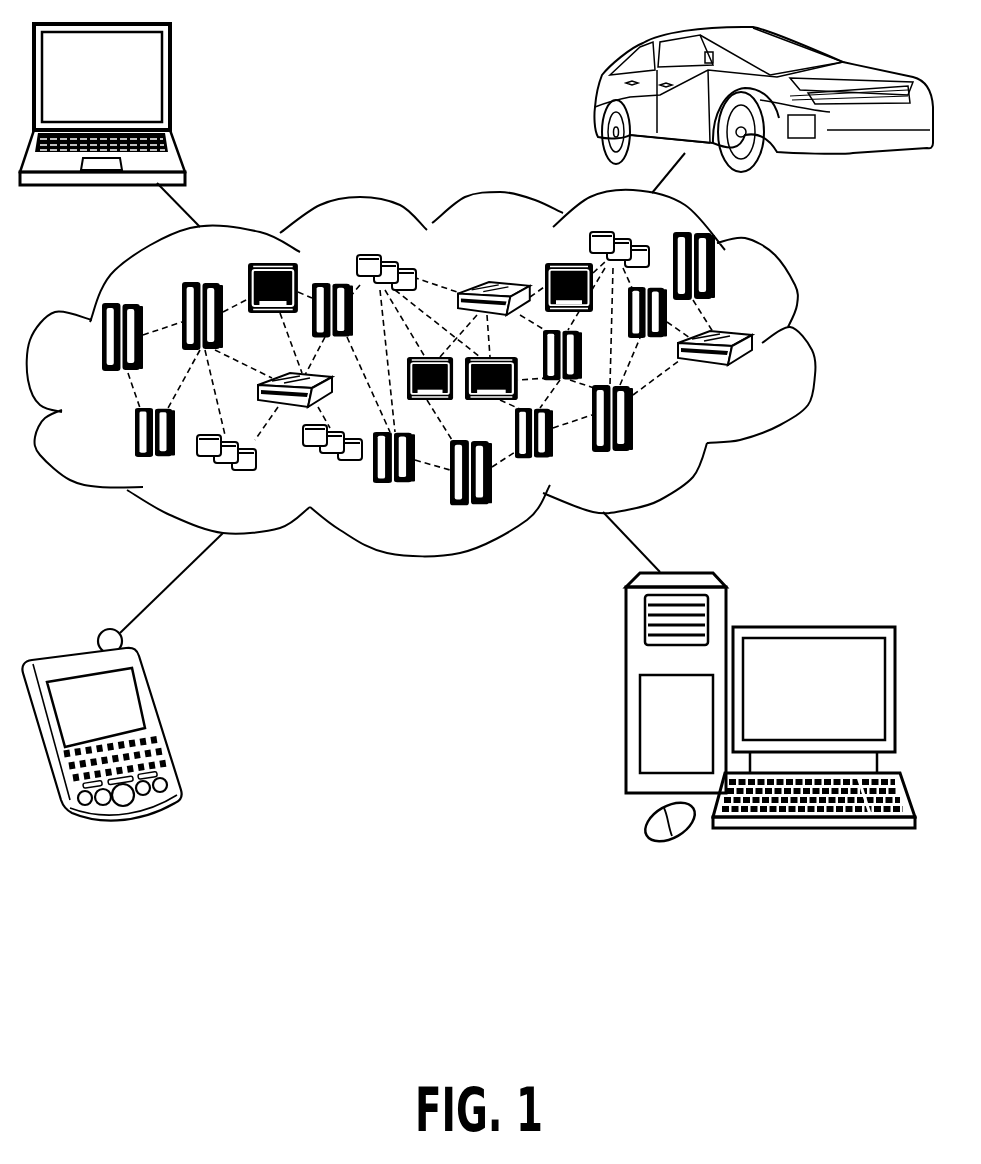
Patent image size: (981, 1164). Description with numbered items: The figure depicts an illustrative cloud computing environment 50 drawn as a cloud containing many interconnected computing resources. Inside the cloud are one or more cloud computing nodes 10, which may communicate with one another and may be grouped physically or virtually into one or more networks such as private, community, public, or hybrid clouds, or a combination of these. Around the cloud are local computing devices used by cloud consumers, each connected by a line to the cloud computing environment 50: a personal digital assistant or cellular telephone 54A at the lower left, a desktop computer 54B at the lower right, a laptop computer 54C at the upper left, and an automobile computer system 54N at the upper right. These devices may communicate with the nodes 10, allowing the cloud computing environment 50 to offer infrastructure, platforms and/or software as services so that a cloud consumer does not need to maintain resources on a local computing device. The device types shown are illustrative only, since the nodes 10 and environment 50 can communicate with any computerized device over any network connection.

The cloud computing nodes 10 is at (476, 436).
The cloud computing environment 50 is at (812, 348).
The personal digital assistant or cellular telephone 54A is at (160, 718).
The desktop computer 54B is at (810, 627).
The laptop computer 54C is at (172, 83).
The automobile computer system 54N is at (602, 104).